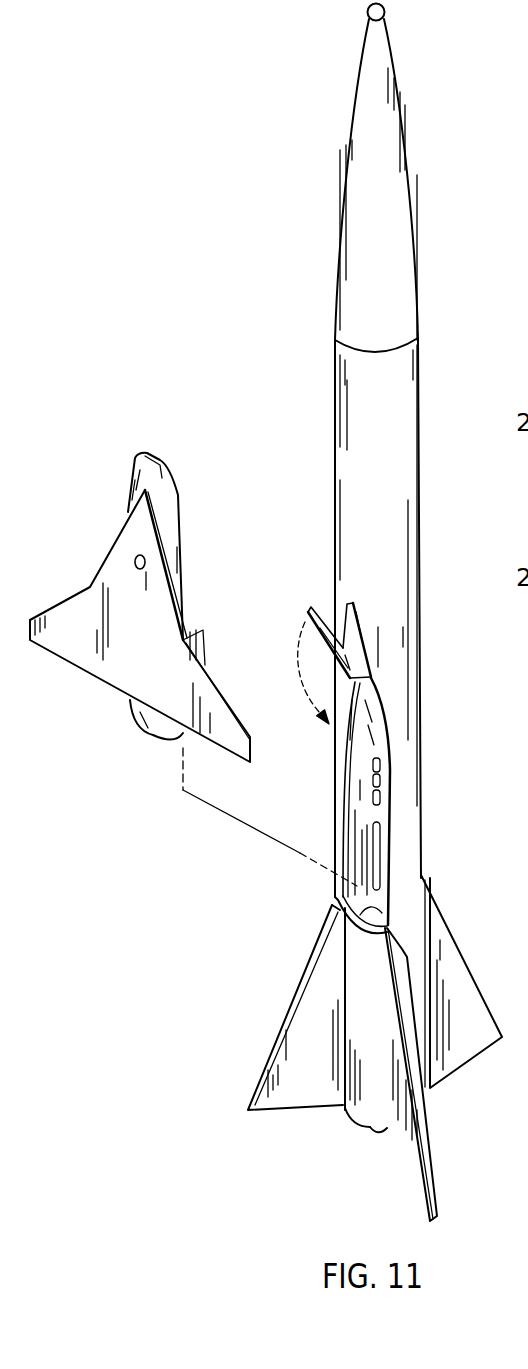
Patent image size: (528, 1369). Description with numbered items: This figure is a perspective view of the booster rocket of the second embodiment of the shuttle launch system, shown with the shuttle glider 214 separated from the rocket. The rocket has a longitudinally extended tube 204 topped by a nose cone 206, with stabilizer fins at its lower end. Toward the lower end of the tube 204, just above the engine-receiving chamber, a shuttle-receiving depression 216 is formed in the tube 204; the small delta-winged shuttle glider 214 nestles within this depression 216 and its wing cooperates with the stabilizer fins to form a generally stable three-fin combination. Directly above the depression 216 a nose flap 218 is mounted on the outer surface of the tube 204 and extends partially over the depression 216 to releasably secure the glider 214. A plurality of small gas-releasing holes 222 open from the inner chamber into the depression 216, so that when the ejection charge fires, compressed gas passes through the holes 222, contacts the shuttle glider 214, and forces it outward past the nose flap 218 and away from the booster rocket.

The longitudinally extended tube 204 is at (362, 487).
The nose cone 206 is at (388, 202).
The shuttle glider 214 is at (144, 614).
The shuttle-receiving depression 216 is at (361, 799).
The nose flap 218 is at (355, 657).
The gas-releasing holes 222 is at (383, 780).